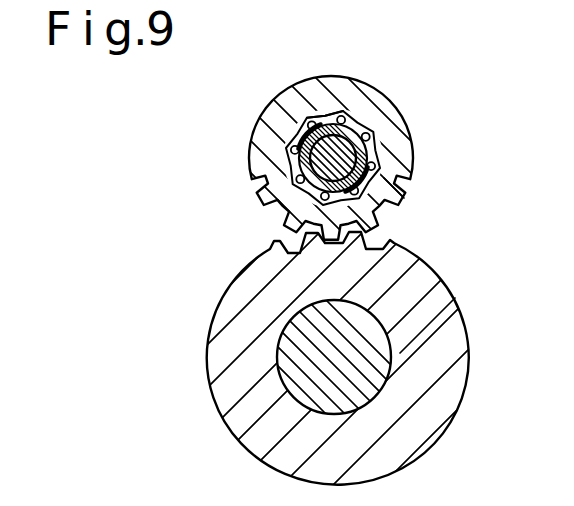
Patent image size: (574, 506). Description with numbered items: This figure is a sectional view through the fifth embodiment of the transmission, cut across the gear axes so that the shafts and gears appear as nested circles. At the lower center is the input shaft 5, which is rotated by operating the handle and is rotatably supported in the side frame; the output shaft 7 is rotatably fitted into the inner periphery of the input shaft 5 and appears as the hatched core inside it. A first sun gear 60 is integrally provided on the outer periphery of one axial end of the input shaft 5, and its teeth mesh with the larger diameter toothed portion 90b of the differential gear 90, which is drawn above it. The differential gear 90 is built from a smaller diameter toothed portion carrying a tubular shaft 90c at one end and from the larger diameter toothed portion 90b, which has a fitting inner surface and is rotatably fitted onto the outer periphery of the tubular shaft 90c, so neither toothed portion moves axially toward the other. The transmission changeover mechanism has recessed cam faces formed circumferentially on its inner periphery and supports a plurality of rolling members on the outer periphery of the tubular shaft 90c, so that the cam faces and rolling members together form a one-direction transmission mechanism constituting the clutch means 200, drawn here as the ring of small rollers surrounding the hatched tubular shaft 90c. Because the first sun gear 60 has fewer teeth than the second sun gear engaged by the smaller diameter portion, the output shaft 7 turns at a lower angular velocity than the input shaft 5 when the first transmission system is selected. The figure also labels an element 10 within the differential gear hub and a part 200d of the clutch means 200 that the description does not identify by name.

The input shaft 5 is at (433, 320).
The output shaft 7 is at (373, 365).
The pinion shaft 10 is at (306, 138).
The first sun gear 60 is at (400, 253).
The differential gear 90 is at (341, 77).
The larger diameter toothed portion 90b is at (392, 186).
The tubular shaft 90c is at (326, 113).
The clutch means 200 is at (348, 114).
The bearing outer race 200d is at (371, 131).